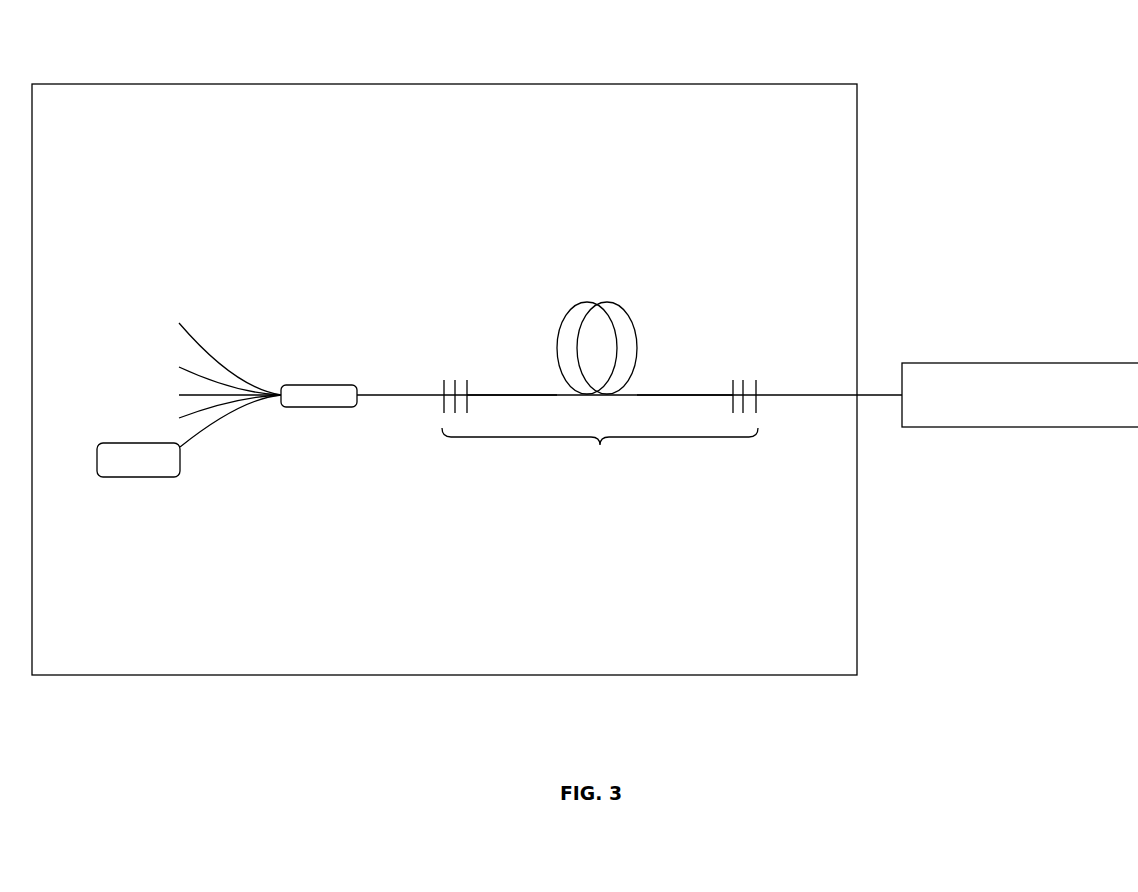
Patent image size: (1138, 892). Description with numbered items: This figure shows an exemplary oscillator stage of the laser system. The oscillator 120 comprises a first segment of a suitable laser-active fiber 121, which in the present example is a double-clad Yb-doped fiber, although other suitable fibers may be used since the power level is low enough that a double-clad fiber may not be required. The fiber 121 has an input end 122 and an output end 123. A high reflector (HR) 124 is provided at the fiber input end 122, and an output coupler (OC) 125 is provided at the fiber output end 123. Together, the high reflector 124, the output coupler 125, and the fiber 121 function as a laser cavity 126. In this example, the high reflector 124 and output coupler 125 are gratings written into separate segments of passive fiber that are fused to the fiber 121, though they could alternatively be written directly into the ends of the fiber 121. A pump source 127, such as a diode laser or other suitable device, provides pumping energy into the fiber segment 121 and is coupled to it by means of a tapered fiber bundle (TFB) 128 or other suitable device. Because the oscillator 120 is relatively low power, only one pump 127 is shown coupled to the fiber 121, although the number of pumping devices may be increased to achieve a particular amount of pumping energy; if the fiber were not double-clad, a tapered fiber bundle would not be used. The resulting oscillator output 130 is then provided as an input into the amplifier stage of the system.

The oscillator 120 is at (530, 113).
The laser-active fiber 121 is at (707, 285).
The input end 122 is at (547, 386).
The output end 123 is at (682, 386).
The high reflector 124 is at (473, 368).
The output coupler 125 is at (760, 368).
The laser cavity 126 is at (617, 531).
The pump source 127 is at (148, 435).
The tapered fiber bundle 128 is at (338, 355).
The oscillator output 130 is at (1050, 353).